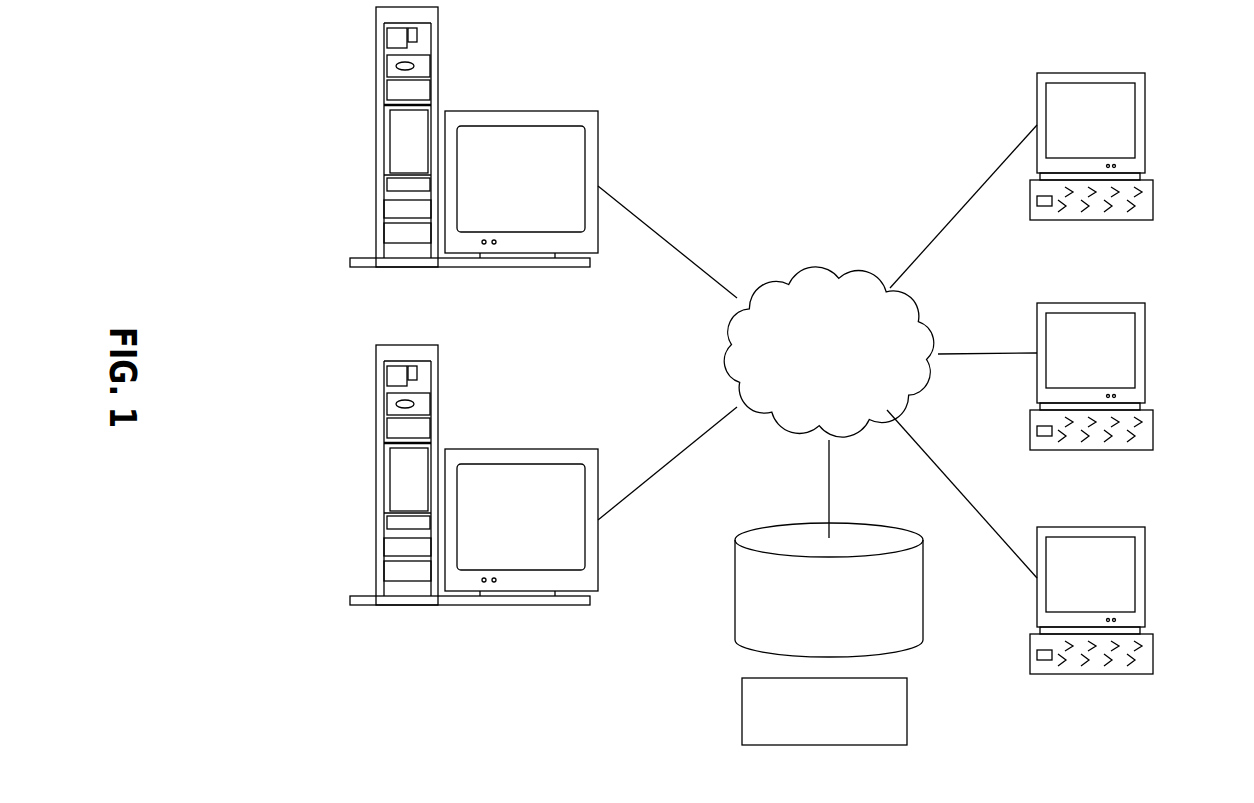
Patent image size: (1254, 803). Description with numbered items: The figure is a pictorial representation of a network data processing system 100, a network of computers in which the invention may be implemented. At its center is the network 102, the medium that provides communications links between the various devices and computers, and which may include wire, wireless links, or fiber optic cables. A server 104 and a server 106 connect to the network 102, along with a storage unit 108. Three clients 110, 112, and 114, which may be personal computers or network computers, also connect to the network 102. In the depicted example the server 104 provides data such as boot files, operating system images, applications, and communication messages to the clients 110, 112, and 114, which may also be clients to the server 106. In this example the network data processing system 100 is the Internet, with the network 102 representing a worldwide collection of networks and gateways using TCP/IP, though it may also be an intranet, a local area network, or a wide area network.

The network data processing system 100 is at (905, 90).
The network 102 is at (790, 282).
The server 104 is at (375, 137).
The server 106 is at (375, 475).
The storage unit 108 is at (735, 605).
The client 110 is at (1150, 123).
The client 112 is at (1150, 353).
The client 114 is at (1147, 576).